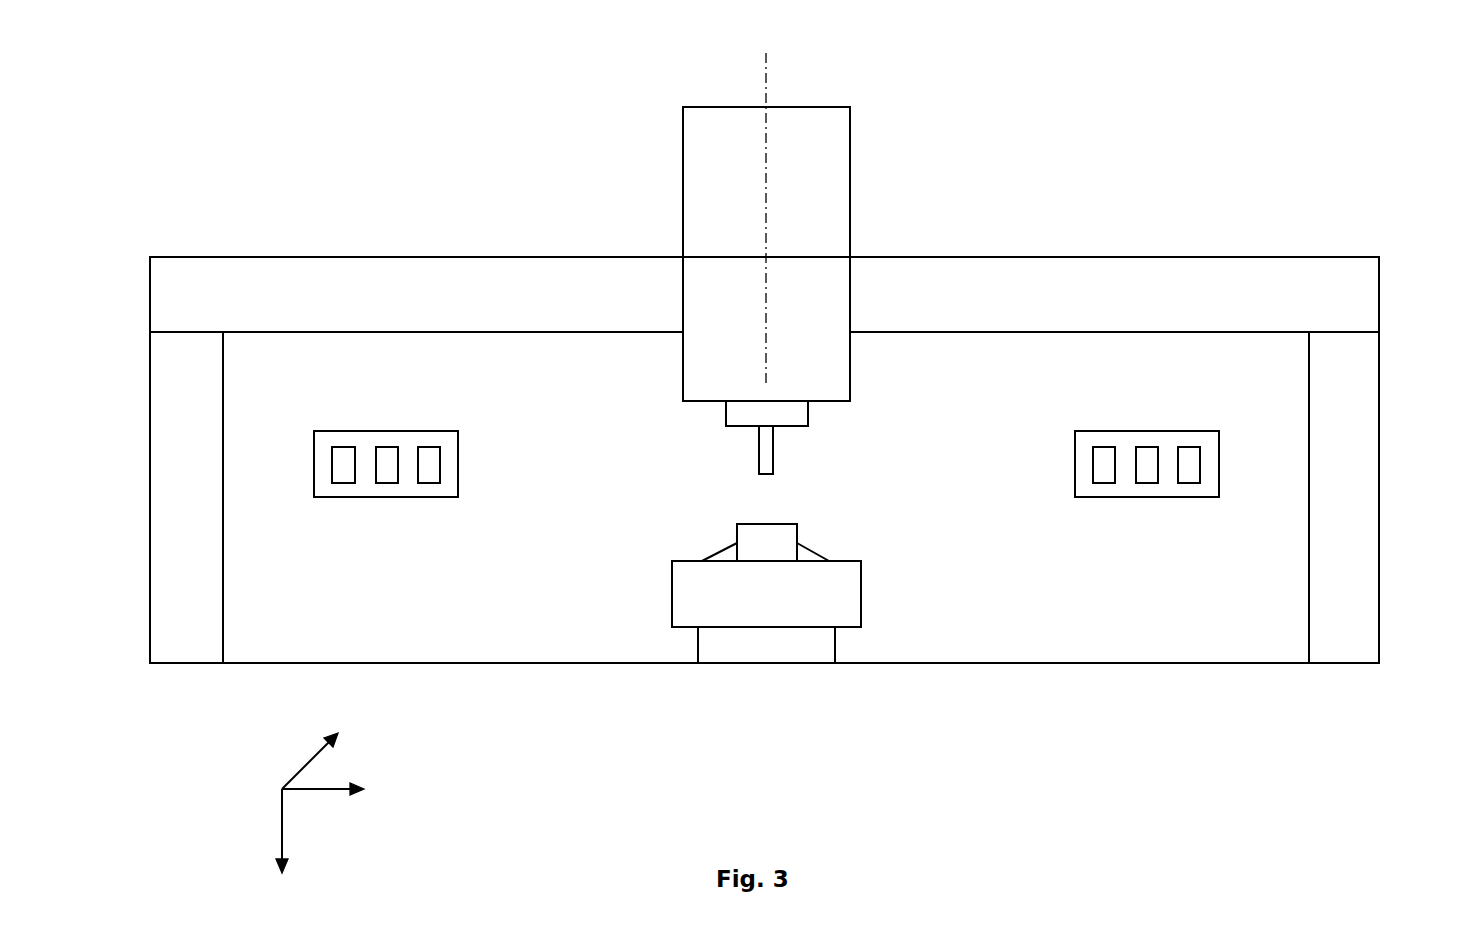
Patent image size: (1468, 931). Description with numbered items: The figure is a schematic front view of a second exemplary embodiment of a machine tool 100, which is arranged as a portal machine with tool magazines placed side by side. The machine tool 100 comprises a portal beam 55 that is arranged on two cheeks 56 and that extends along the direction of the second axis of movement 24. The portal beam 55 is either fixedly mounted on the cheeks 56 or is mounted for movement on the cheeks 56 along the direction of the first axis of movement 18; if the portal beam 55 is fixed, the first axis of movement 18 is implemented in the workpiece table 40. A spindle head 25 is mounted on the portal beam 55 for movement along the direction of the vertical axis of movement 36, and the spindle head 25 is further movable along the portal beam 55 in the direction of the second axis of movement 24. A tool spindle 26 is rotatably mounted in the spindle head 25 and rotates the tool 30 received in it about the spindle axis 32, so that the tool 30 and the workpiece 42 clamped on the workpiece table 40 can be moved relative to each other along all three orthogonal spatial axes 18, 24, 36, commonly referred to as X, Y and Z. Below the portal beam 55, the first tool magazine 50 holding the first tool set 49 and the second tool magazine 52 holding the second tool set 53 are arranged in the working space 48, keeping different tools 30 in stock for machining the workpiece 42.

The machine tool 100 is at (1196, 107).
The portal beam 55 is at (1221, 270).
The cheeks 56 is at (160, 474).
The spindle head 25 is at (838, 186).
The spindle axis 32 is at (767, 75).
The tool spindle 26 is at (797, 415).
The tool 30 is at (766, 448).
The second tool magazine 52 is at (447, 490).
The second tool set 53 is at (367, 444).
The first tool magazine 50 is at (1207, 490).
The first tool set 49 is at (1169, 444).
The workpiece table 40 is at (852, 595).
The workpiece 42 is at (783, 542).
The working space 48 is at (982, 558).
The first axis of movement 18 is at (302, 768).
The second axis of movement 24 is at (337, 787).
The vertical axis of movement 36 is at (285, 838).